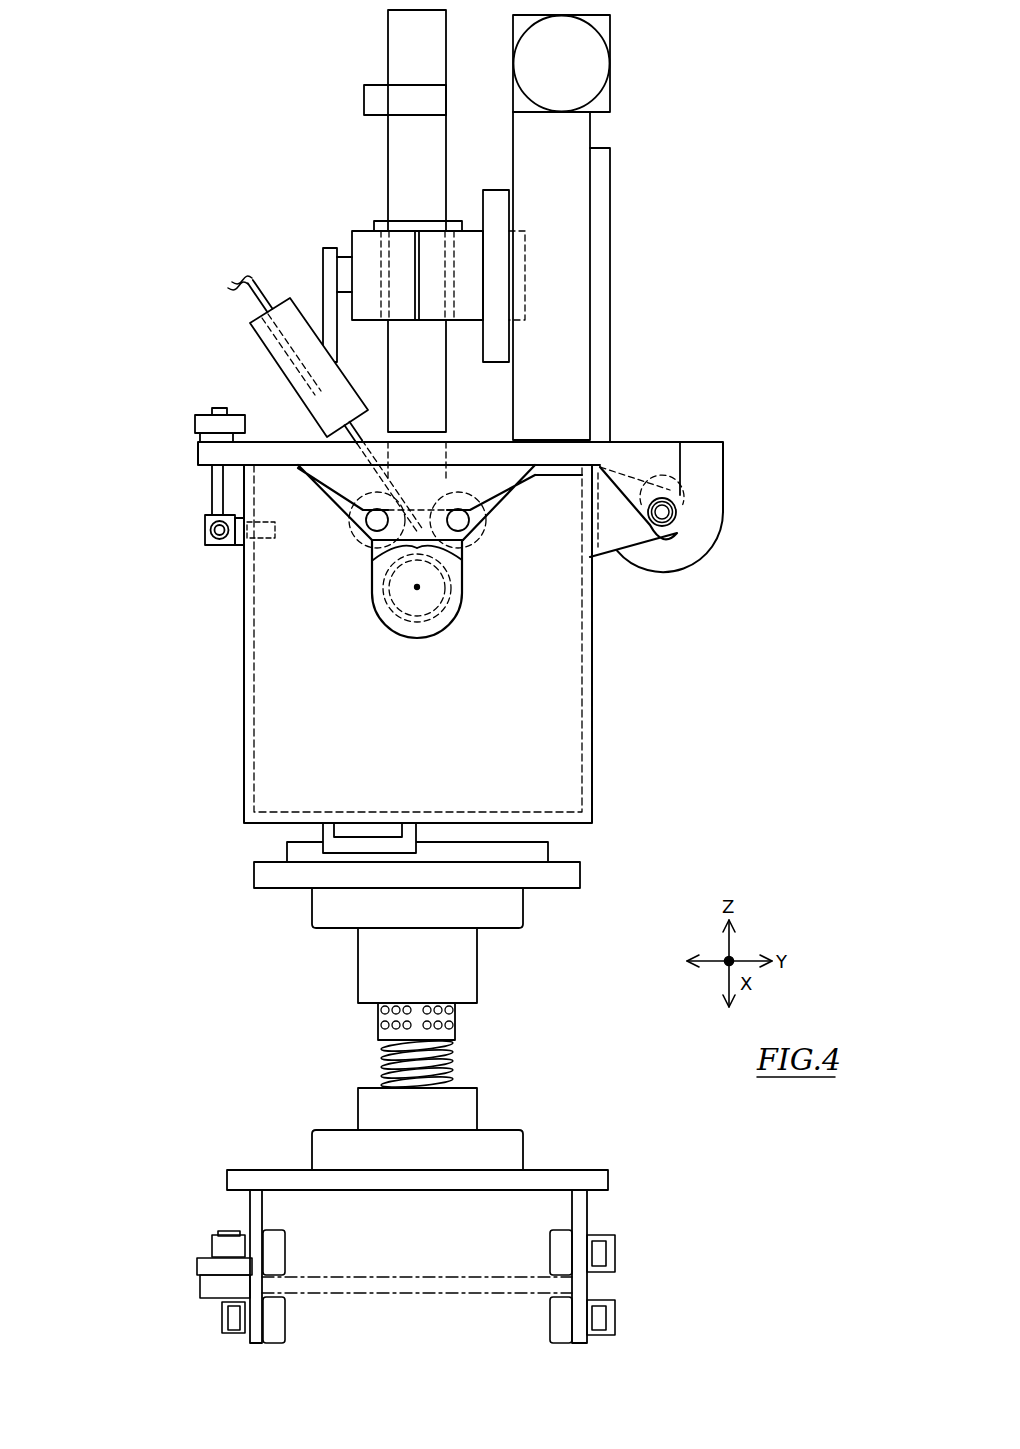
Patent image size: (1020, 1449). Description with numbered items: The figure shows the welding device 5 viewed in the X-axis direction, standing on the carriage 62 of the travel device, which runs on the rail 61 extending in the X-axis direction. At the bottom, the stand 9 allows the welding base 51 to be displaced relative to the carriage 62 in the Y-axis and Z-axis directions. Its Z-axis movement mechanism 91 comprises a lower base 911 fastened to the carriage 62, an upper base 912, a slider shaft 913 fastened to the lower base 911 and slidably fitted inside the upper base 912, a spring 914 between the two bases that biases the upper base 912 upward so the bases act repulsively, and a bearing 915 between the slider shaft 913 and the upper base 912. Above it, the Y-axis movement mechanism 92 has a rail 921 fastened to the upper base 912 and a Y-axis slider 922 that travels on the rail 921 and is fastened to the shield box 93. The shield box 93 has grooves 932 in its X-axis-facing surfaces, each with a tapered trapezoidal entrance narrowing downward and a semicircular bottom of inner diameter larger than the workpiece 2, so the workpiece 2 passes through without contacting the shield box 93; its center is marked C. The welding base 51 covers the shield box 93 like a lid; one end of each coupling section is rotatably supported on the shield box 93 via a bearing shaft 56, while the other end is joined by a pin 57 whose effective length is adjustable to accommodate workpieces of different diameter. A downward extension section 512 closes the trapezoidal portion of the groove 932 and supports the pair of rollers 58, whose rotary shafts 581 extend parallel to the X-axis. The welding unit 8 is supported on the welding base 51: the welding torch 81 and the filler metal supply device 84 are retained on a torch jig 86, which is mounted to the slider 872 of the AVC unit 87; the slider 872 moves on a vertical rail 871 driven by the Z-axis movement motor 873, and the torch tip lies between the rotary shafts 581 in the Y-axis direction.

The welding device 5 is at (122, 130).
The welding unit 8 is at (694, 208).
The stand 9 is at (688, 813).
The workpiece 2 is at (447, 620).
The welding base 51 is at (290, 442).
The downward extension section 512 is at (323, 495).
The bearing shaft 56 is at (662, 512).
The pin 57 is at (212, 487).
The rollers 58 is at (363, 555).
The rotary shafts 581 is at (373, 520).
The rail 61 is at (393, 1297).
The carriage 62 is at (608, 1178).
The welding torch 81 is at (445, 432).
The filler metal supply device 84 is at (270, 358).
The torch jig 86 is at (352, 243).
The AVC unit 87 is at (619, 119).
The rail 871 is at (612, 385).
The slider 872 is at (509, 330).
The Z-axis movement motor 873 is at (612, 50).
The Z-axis movement mechanism 91 is at (550, 1038).
The lower base 911 is at (312, 1150).
The upper base 912 is at (358, 960).
The slider shaft 913 is at (381, 1063).
The spring 914 is at (453, 1065).
The bearing 915 is at (455, 1023).
The Y-axis movement mechanism 92 is at (572, 843).
The rail 921 is at (287, 855).
The Y-axis slider 922 is at (323, 828).
The shield box 93 is at (592, 778).
The grooves 932 is at (372, 606).
The center axis C is at (417, 588).